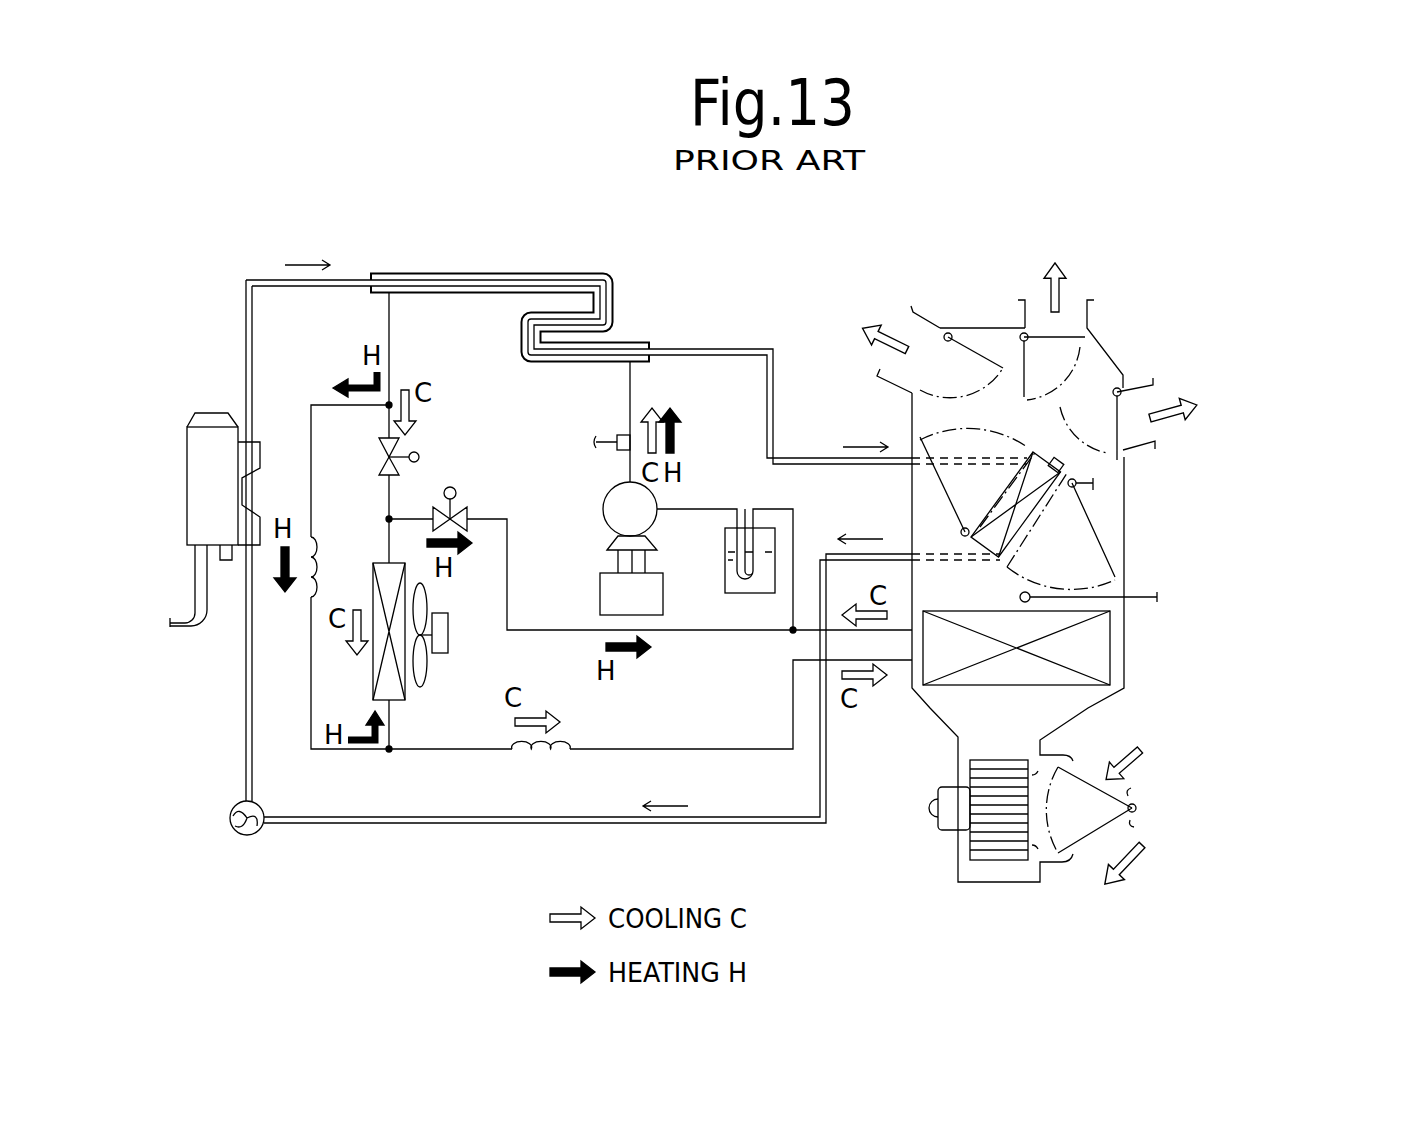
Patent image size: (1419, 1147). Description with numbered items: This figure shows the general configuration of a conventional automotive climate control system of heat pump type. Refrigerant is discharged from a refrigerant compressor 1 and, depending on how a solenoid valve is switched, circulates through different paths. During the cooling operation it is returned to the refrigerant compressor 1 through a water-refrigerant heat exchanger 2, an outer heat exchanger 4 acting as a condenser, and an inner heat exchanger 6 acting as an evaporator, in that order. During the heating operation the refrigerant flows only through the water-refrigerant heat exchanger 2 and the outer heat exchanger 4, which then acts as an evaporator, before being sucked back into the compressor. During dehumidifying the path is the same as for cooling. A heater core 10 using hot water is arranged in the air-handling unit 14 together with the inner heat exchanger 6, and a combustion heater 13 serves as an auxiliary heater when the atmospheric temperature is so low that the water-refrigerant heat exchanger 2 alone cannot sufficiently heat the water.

The refrigerant compressor 1 is at (605, 503).
The water-refrigerant heat exchanger 2 is at (474, 262).
The outer heat exchanger 4 is at (373, 577).
The inner heat exchanger 6 is at (1105, 653).
The heater core 10 is at (1032, 517).
The combustion heater 13 is at (187, 461).
The air conditioning unit housing 14 is at (1125, 470).